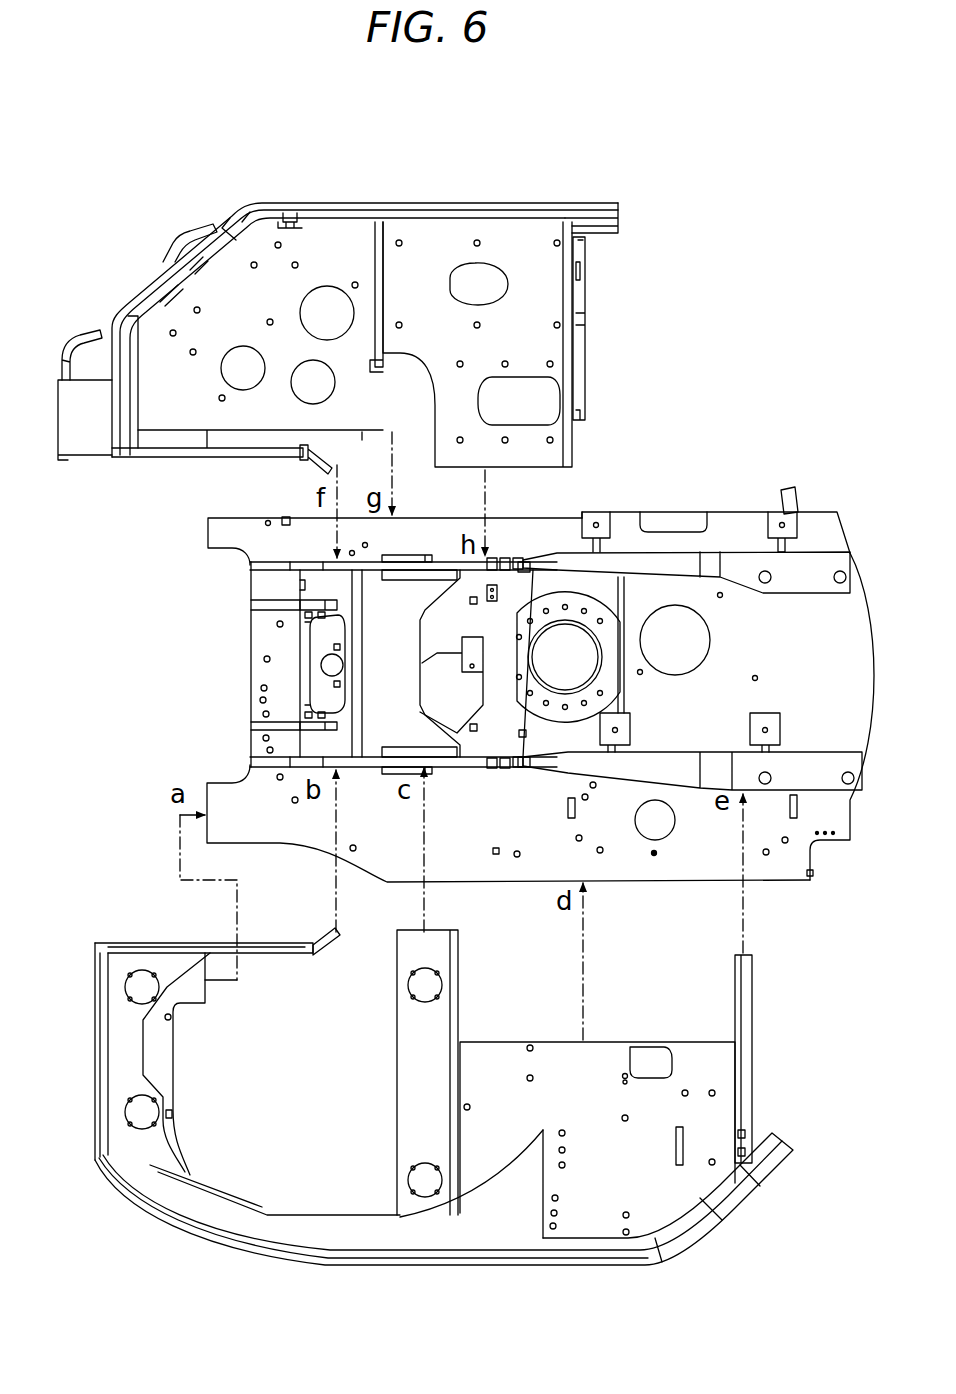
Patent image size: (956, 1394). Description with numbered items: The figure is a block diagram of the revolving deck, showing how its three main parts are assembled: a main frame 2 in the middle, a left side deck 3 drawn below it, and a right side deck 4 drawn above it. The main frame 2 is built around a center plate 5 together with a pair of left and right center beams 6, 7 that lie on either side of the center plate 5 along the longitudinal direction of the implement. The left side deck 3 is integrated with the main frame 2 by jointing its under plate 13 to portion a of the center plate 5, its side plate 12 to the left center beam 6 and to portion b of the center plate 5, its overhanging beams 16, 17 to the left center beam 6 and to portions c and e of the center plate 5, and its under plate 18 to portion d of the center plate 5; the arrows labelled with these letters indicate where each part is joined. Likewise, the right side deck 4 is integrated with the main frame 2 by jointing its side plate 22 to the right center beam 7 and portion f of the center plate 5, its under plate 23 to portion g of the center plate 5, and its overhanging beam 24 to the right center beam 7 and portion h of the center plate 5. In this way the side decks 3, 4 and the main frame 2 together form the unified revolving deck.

The main frame 2 is at (220, 668).
The left side deck 3 is at (245, 1260).
The right side deck 4 is at (298, 200).
The center plate 5 is at (222, 516).
The left center beam 6 is at (371, 768).
The right center beam 7 is at (523, 552).
The side plate 12 is at (324, 948).
The under plate 13 is at (210, 1000).
The overhanging beam 16 is at (458, 945).
The overhanging beam 17 is at (752, 968).
The under plate 18 is at (603, 1042).
The side plate 22 is at (325, 470).
The under plate 23 is at (362, 440).
The overhanging beam 24 is at (484, 368).